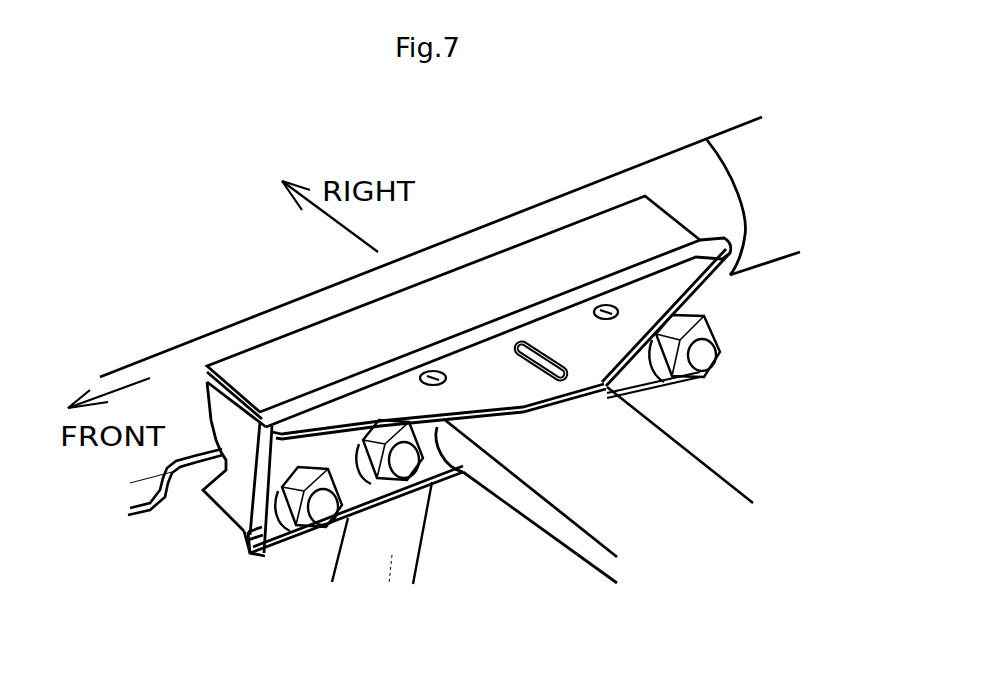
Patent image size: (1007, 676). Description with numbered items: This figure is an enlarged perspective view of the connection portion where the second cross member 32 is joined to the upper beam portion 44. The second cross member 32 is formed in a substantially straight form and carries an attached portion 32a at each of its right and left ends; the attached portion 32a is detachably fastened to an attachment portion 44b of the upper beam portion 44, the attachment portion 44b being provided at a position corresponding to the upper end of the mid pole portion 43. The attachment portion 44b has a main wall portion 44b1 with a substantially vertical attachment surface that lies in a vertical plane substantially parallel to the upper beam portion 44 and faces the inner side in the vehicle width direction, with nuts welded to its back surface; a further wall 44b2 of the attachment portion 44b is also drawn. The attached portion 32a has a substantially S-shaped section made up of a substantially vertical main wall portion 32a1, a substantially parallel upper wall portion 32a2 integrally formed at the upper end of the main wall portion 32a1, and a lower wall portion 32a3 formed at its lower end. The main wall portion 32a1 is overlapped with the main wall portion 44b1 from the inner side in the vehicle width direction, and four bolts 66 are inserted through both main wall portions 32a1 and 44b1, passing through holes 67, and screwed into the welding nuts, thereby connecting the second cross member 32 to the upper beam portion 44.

The second cross member 32 is at (660, 510).
The attached portion 32a is at (657, 377).
The main wall portion 32a1 is at (711, 310).
The upper wall portion 32a2 is at (658, 288).
The lower wall portion 32a3 is at (250, 545).
The mid pole portion 43 is at (390, 560).
The upper beam portion 44 is at (177, 383).
The attachment portion 44b is at (310, 358).
The main wall portion 44b1 is at (247, 492).
The top wall of mounting bracket 44b2 is at (593, 245).
The bolt 66 is at (713, 367).
The hole 67 is at (600, 305).